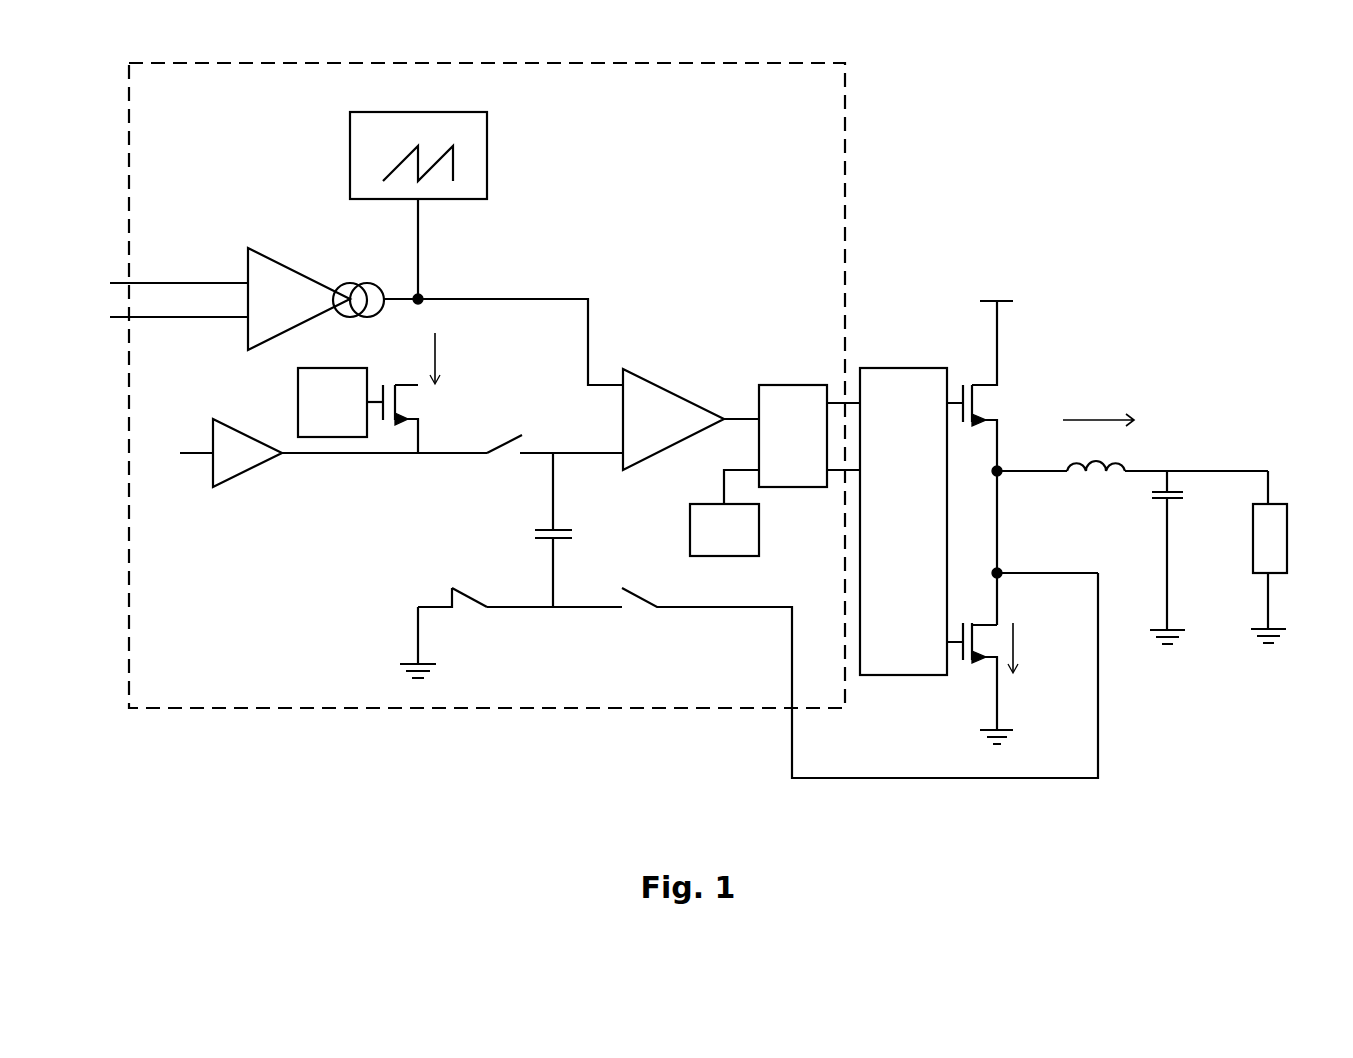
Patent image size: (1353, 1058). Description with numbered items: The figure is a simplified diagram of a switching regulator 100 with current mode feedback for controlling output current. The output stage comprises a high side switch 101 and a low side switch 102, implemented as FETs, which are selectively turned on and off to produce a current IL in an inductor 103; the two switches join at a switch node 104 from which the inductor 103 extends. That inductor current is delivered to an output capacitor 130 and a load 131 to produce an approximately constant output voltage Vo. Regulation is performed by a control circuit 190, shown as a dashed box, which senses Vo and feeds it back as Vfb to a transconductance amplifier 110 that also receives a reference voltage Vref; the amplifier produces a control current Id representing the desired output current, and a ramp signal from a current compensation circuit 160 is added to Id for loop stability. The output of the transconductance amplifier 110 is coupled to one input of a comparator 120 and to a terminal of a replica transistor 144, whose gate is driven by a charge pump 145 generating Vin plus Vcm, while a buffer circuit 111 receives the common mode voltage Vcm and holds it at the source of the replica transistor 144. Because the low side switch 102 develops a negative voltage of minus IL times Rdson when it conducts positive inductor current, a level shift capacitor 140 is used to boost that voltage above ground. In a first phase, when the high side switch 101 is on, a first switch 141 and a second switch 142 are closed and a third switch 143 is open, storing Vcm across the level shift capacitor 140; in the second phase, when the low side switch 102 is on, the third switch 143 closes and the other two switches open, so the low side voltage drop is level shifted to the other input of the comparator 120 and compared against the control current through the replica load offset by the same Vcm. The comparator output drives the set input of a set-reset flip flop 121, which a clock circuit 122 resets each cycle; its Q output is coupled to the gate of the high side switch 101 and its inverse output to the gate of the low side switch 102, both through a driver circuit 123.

The switching regulator 100 is at (1030, 86).
The high side switch 101 is at (980, 372).
The low side switch 102 is at (1022, 607).
The inductor 103 is at (1098, 464).
The switch node 104 is at (1001, 468).
The transconductance amplifier 110 is at (265, 252).
The buffer circuit 111 is at (231, 432).
The comparator 120 is at (640, 373).
The set-reset flip flop 121 is at (809, 436).
The clock circuit 122 is at (738, 556).
The driver circuit 123 is at (903, 521).
The output capacitor 130 is at (1160, 500).
The load 131 is at (1292, 546).
The level shift capacitor 140 is at (570, 530).
The switch S1 141 is at (554, 467).
The switch S2 142 is at (476, 633).
The switch S3 143 is at (825, 675).
The replica transistor 144 is at (426, 393).
The charge pump 145 is at (325, 368).
The current compensation circuit 160 is at (480, 112).
The control circuit 190 is at (365, 712).